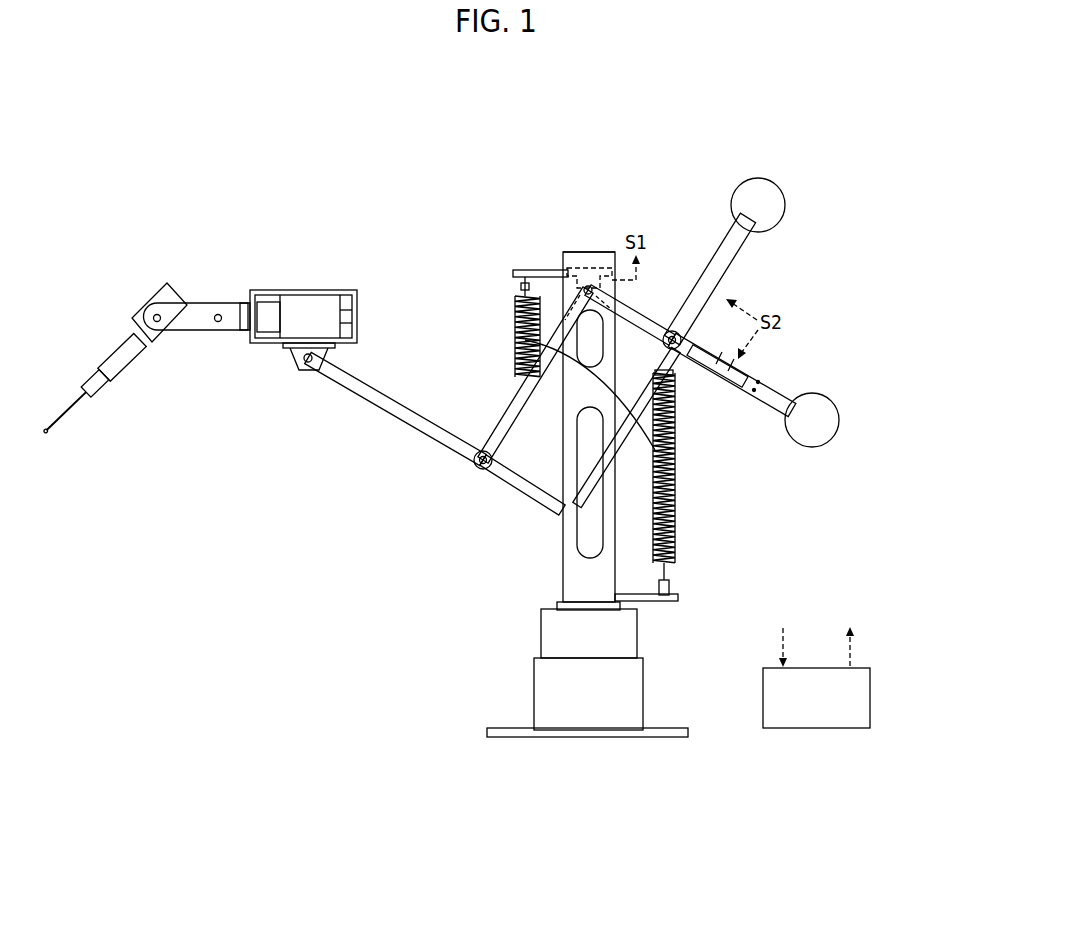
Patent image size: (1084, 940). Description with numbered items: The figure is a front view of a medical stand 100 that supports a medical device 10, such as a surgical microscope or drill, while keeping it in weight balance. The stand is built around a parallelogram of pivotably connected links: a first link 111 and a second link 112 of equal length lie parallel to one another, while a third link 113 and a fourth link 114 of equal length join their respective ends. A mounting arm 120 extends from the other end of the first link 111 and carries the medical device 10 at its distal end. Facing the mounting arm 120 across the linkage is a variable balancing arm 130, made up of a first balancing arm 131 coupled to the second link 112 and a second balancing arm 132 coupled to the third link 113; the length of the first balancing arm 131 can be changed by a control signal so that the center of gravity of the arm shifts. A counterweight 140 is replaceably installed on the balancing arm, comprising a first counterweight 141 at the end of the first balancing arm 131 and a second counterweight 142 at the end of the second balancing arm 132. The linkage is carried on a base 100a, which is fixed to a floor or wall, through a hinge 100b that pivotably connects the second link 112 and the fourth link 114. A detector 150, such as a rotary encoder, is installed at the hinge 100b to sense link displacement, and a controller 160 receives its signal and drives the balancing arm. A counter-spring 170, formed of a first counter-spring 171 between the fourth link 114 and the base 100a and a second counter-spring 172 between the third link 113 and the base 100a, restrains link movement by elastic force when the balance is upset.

The medical device 10 is at (99, 342).
The medical stand 100 is at (546, 153).
The base 100a is at (567, 585).
The hinge 100b is at (559, 261).
The first link 111 is at (525, 487).
The second link 112 is at (653, 323).
The third link 113 is at (676, 408).
The fourth link 114 is at (507, 412).
The mounting arm 120 is at (372, 392).
The variable balancing arm 130 is at (775, 314).
The first balancing arm 131 is at (775, 372).
The second balancing arm 132 is at (759, 262).
The counterweight 140 is at (846, 312).
The first counterweight 141 is at (845, 415).
The second counterweight 142 is at (772, 197).
The detector 150 is at (585, 267).
The controller 160 is at (818, 730).
The counter-spring 170 is at (732, 468).
The first counter-spring 171 is at (676, 462).
The second counter-spring 172 is at (676, 530).